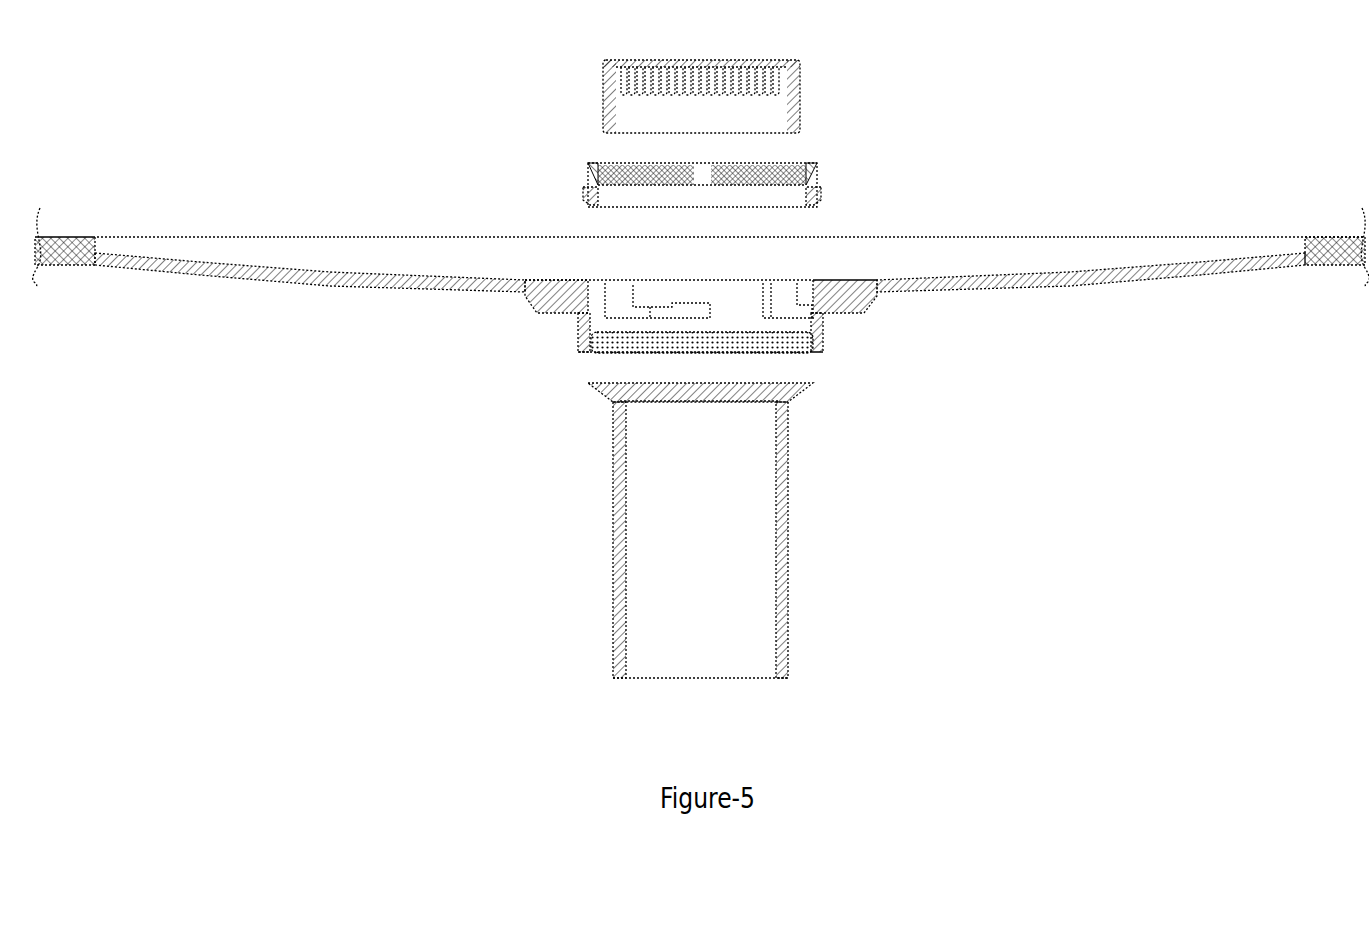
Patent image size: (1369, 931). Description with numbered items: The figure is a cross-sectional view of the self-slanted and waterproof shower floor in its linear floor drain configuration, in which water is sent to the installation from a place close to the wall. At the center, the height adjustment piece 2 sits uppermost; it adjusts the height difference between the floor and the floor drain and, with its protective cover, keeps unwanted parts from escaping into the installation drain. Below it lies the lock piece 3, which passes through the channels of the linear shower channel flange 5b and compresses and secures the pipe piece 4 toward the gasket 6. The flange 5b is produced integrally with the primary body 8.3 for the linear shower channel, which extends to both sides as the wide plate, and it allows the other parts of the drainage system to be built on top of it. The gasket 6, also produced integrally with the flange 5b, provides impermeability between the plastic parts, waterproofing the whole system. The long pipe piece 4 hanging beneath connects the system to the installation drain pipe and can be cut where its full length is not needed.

The height adjustment piece 2 is at (650, 103).
The lock piece 3 is at (768, 197).
The pipe piece 4 is at (742, 607).
The linear shower channel flange 5b is at (840, 250).
The gasket 6 is at (627, 345).
The primary body for linear shower channel 8.3 is at (80, 265).